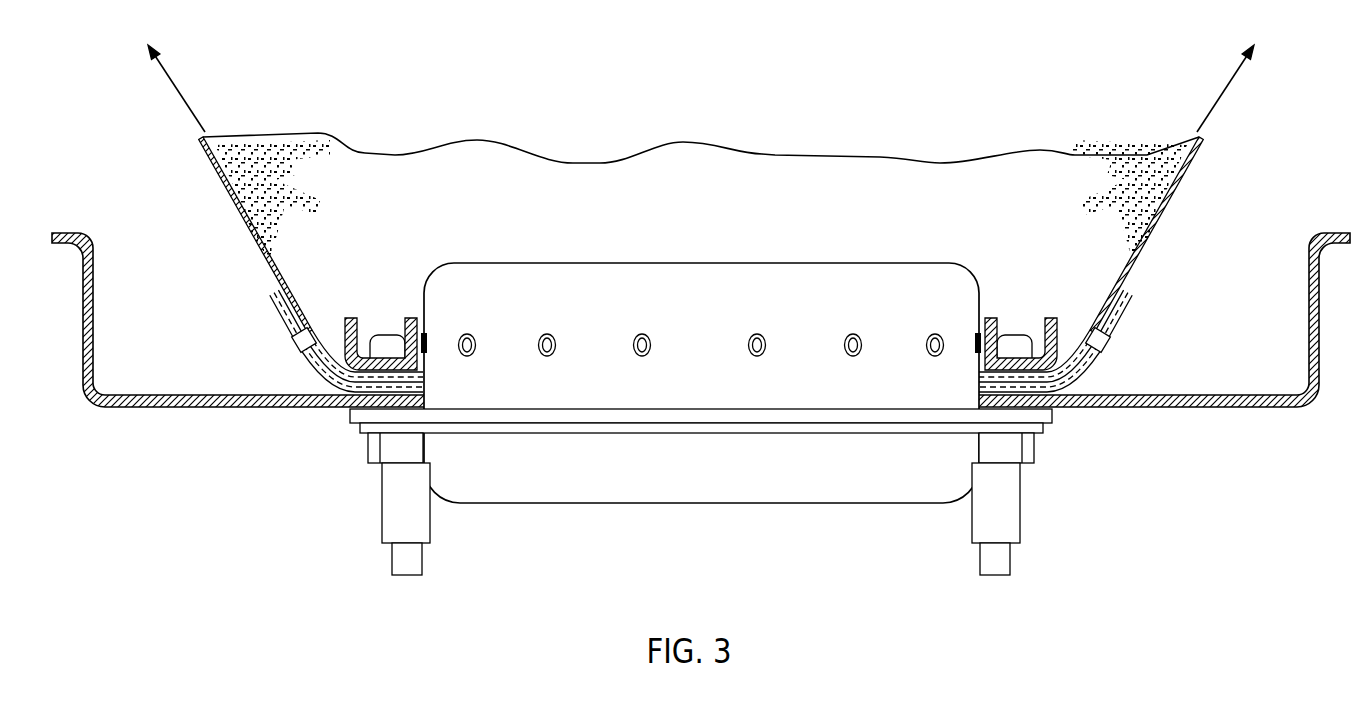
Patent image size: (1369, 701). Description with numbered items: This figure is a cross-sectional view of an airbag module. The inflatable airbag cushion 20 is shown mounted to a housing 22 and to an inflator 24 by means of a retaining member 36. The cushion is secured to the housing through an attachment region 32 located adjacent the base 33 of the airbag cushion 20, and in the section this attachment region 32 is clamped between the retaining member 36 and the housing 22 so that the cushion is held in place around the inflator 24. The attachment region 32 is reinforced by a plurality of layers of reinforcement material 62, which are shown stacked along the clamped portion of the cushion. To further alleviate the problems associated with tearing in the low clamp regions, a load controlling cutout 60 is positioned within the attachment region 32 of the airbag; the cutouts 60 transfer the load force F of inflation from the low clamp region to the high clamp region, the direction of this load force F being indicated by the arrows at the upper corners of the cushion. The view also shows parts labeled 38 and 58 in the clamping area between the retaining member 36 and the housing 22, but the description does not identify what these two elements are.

The inflatable airbag cushion 20 is at (693, 180).
The housing 22 is at (135, 380).
The inflator 24 is at (610, 488).
The attachment region 32 is at (325, 328).
The base of the airbag cushion 33 is at (427, 258).
The retaining member 36 is at (340, 388).
The retaining rod 38 is at (395, 343).
The clip channel 58 is at (365, 320).
The load controlling cutout 60 is at (308, 345).
The layers of reinforcement material 62 is at (285, 285).
The load force of inflation F is at (178, 84).